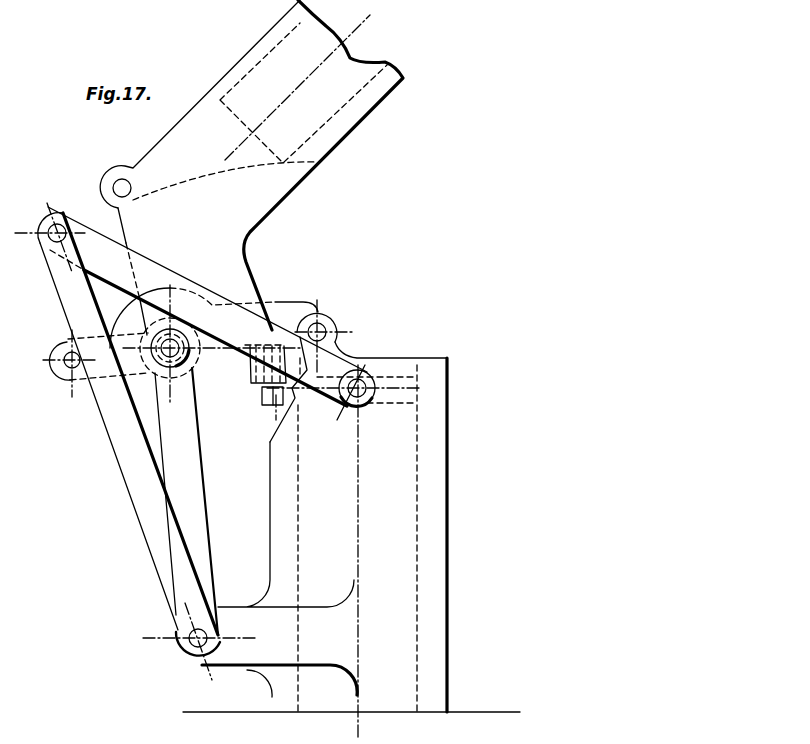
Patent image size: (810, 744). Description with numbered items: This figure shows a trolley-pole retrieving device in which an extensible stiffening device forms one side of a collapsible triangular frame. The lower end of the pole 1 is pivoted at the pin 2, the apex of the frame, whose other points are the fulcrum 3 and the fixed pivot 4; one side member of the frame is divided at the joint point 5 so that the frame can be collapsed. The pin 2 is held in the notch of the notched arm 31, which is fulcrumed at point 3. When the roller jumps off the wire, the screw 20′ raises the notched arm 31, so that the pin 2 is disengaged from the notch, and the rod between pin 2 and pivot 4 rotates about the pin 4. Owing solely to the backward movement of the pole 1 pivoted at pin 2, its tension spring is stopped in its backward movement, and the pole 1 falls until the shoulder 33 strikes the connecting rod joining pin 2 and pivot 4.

The pole 1 is at (318, 115).
The pin 2 is at (188, 352).
The fulcrum point 3 is at (322, 330).
The fixed pivot 4 is at (180, 660).
The joint point 5 is at (75, 372).
The screw 20′ is at (267, 377).
The notched arm 31 is at (285, 312).
The shoulder 33 is at (289, 398).